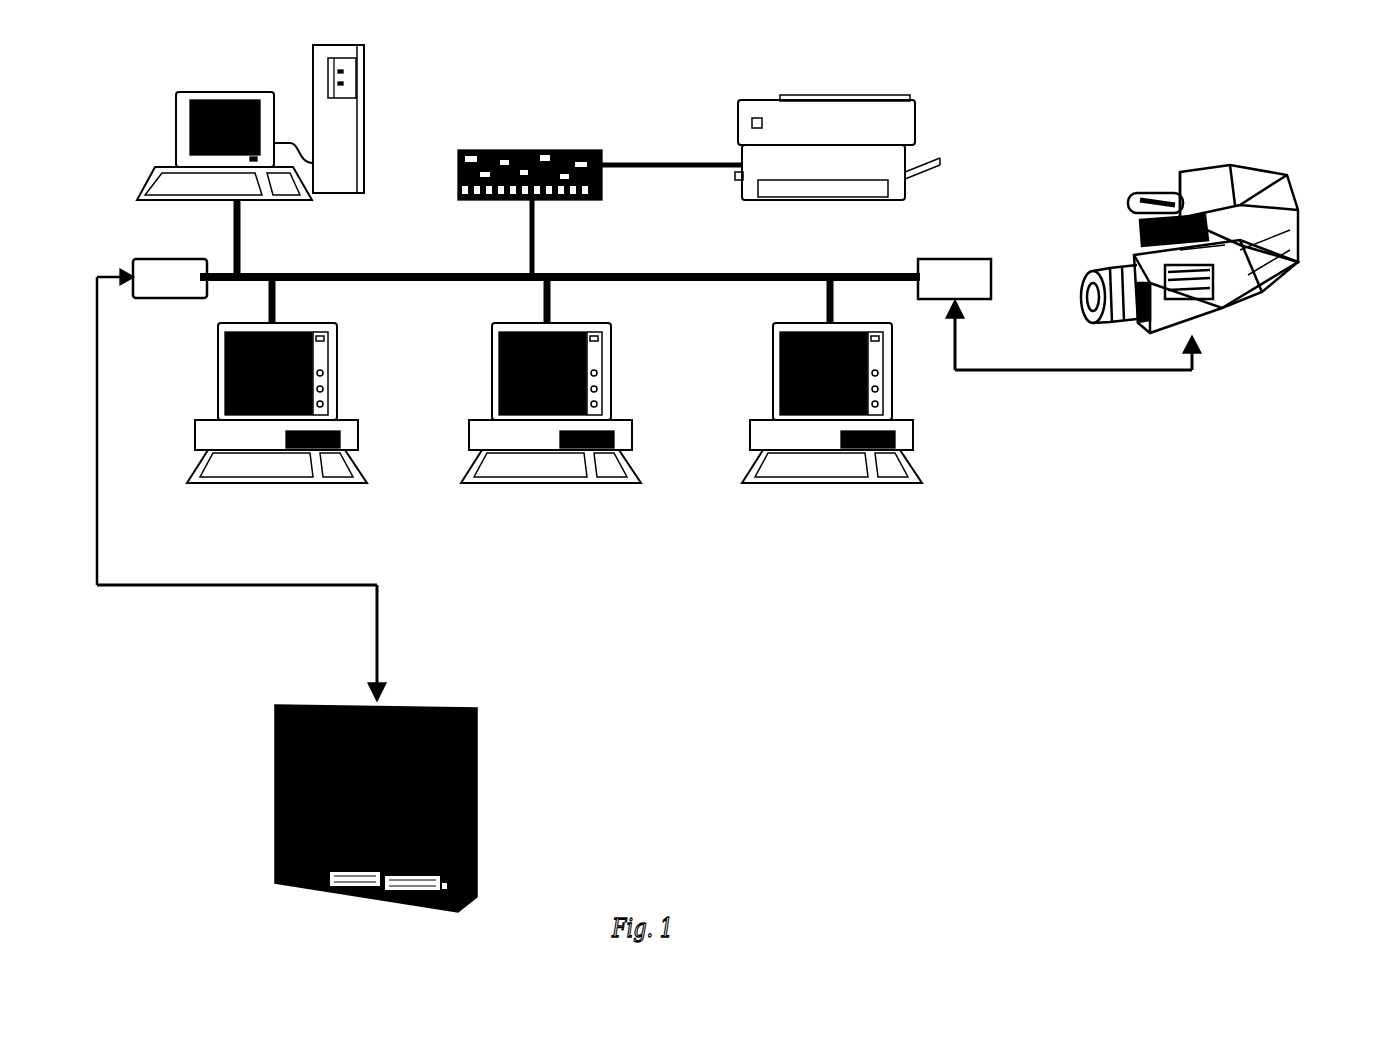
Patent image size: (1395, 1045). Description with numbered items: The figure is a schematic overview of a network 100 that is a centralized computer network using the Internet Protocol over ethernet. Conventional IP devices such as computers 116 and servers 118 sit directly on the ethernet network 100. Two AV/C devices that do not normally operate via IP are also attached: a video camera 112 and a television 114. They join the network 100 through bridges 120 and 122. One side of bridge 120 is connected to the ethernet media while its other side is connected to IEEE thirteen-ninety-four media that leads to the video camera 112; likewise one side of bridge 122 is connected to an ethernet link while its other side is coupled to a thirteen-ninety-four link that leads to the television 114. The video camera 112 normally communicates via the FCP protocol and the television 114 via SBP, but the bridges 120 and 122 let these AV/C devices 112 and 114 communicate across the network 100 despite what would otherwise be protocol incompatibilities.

The network 100 is at (803, 615).
The video camera 112 is at (1273, 182).
The television 114 is at (477, 788).
The computers 116 is at (353, 433).
The servers 118 is at (492, 150).
The bridge 120 is at (970, 268).
The bridge 122 is at (147, 270).